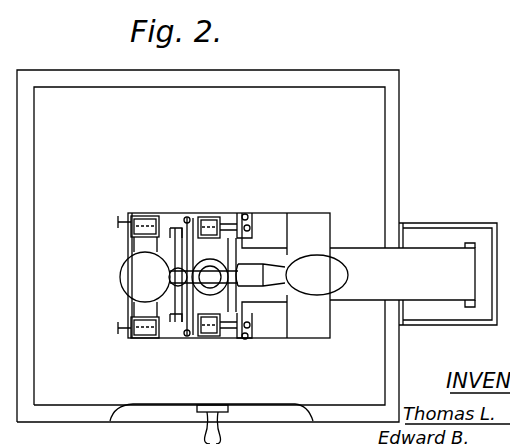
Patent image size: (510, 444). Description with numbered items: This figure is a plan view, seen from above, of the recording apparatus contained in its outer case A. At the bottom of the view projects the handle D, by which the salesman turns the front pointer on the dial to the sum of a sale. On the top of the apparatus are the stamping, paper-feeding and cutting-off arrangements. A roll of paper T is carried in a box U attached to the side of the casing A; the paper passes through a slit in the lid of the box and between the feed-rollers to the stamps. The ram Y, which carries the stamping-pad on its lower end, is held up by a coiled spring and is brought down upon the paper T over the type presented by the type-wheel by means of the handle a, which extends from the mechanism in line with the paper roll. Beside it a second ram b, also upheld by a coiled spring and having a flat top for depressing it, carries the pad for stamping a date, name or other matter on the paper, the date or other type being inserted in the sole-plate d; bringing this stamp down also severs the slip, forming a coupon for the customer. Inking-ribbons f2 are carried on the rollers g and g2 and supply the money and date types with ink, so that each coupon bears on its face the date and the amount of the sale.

The outer case A is at (208, 246).
The ram b is at (145, 277).
The ram Y is at (210, 272).
The handle a is at (292, 275).
The roll of paper T is at (402, 275).
The box U is at (448, 269).
The sole-plate d is at (264, 275).
The roller g is at (241, 217).
The roller g2 is at (162, 214).
The inking-ribbon f2 is at (210, 215).
The handle D is at (208, 437).